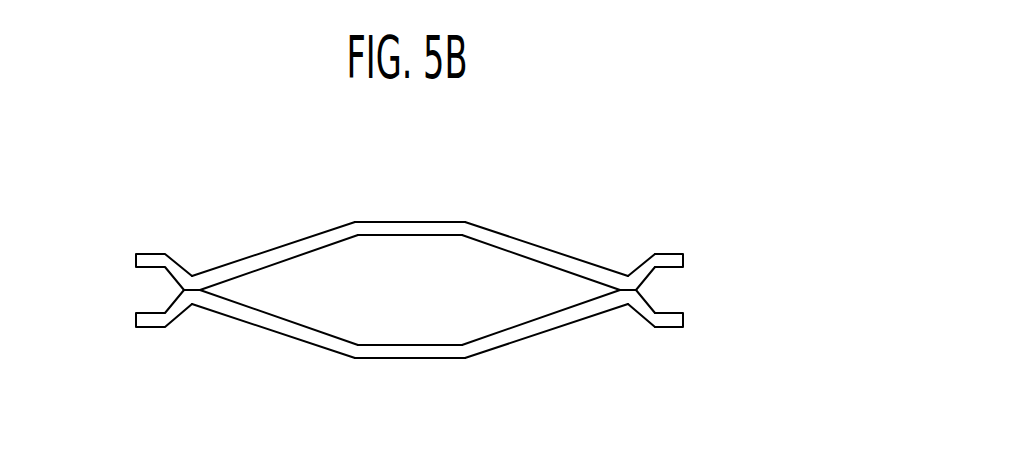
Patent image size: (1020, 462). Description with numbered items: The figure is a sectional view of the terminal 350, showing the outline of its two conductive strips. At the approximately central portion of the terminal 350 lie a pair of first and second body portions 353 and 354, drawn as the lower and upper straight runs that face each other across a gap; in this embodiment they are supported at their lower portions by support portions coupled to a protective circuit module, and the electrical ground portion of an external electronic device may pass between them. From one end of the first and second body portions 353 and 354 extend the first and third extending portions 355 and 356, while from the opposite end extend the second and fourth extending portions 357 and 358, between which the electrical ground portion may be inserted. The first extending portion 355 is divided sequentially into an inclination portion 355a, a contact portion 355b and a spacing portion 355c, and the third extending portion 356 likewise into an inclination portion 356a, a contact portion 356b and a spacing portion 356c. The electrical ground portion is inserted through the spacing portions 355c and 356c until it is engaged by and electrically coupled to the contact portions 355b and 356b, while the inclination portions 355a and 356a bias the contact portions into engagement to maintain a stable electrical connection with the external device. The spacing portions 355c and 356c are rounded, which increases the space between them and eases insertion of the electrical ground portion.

The terminal 350 is at (714, 162).
The first body portion 353 is at (440, 360).
The second body portion 354 is at (437, 220).
The first extending portion 355 is at (682, 403).
The inclination portion 355a is at (533, 336).
The contact portion 355b is at (628, 315).
The spacing portion 355c is at (673, 327).
The third extending portion 356 is at (682, 169).
The inclination portion 356a is at (533, 246).
The contact portion 356b is at (630, 265).
The spacing portion 356c is at (673, 254).
The second extending portion 357 is at (287, 335).
The fourth extending portion 358 is at (287, 248).